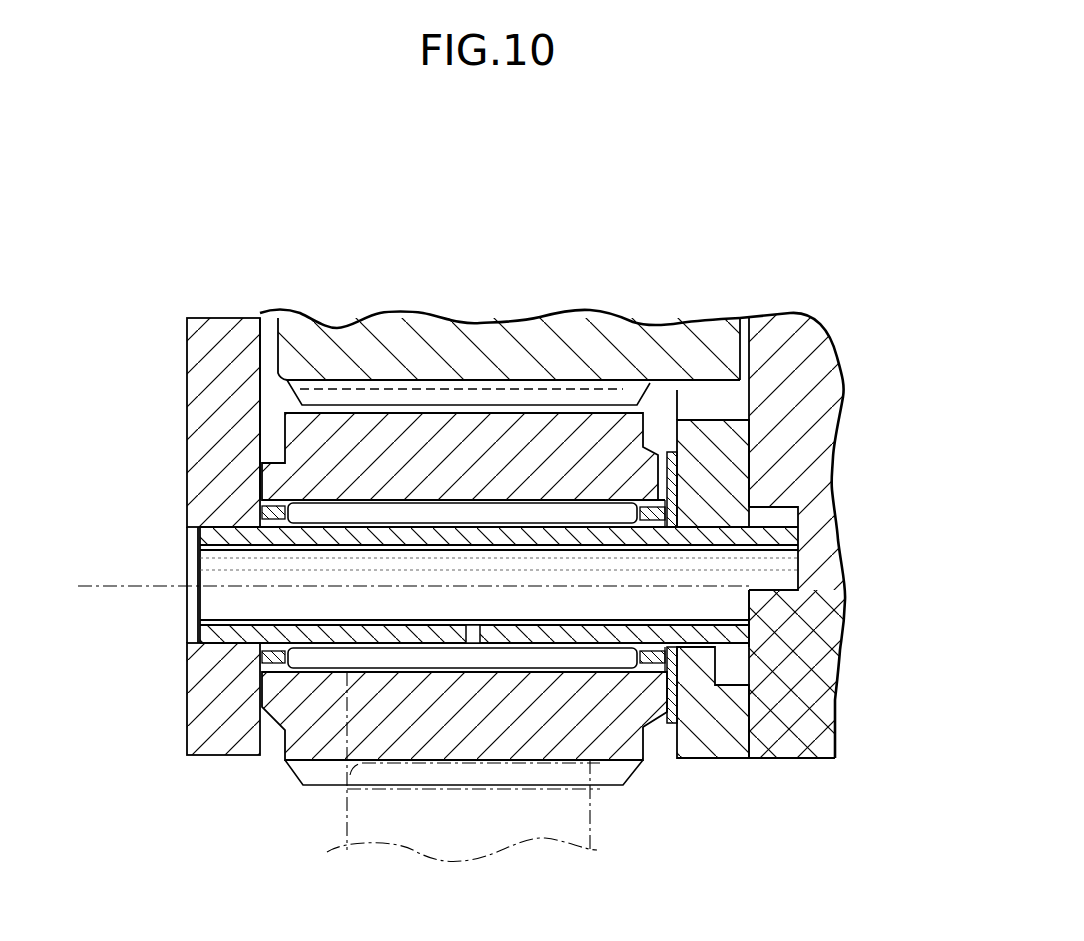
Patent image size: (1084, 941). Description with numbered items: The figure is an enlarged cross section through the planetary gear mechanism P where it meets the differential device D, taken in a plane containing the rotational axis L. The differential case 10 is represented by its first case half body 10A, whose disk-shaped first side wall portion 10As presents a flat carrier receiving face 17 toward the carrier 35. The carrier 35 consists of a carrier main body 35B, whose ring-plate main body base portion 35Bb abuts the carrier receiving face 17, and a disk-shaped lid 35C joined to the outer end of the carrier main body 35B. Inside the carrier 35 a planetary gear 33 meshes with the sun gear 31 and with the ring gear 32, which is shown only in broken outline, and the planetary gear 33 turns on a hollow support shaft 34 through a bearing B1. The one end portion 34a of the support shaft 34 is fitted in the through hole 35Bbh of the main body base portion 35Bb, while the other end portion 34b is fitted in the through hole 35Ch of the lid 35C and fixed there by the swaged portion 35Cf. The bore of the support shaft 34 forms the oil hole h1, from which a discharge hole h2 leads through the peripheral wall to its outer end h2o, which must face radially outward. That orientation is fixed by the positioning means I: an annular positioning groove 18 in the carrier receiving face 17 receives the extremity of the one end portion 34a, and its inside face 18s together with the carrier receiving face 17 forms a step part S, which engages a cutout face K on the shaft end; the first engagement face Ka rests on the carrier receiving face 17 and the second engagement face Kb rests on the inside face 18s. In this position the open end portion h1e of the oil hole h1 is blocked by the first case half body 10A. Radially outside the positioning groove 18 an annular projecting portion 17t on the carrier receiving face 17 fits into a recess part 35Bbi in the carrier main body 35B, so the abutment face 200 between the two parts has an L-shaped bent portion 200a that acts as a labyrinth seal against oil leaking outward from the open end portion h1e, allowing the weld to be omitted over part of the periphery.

The differential case 10 is at (793, 763).
The first case half body 10A is at (806, 336).
The first side wall portion 10As is at (810, 370).
The differential device D is at (788, 310).
The carrier 35 is at (183, 350).
The lid 35C is at (185, 711).
The through hole 35Ch is at (200, 550).
The swaged portion 35Cf is at (196, 637).
The sun gear 31 is at (303, 330).
The carrier receiving face 17 is at (747, 398).
The projecting portion 17t is at (728, 667).
The main body base portion 35Bb is at (730, 474).
The through hole 35Bbh is at (697, 638).
The recess part 35Bbi is at (840, 753).
The carrier main body 35B is at (707, 764).
The positioning groove 18 is at (665, 488).
The inside face 18s is at (790, 583).
The abutment face 200 is at (745, 725).
The L-shaped bent portion 200a is at (677, 760).
The planetary gear 33 is at (287, 745).
The ring gear 32 is at (343, 830).
The support shaft 34 is at (410, 647).
The one end portion 34a is at (772, 511).
The other end portion 34b is at (228, 645).
The oil hole h1 is at (380, 618).
The open end portion h1e is at (780, 540).
The discharge hole h2 is at (478, 631).
The outer end h2o is at (471, 644).
The rotational axis L is at (78, 586).
The planetary gear mechanism P is at (180, 792).
The bearing B1 is at (411, 498).
The second engagement face Kb is at (923, 660).
The first engagement face Ka is at (927, 660).
The cutout face K is at (945, 670).
The step part S is at (737, 687).
The positioning means I is at (890, 745).